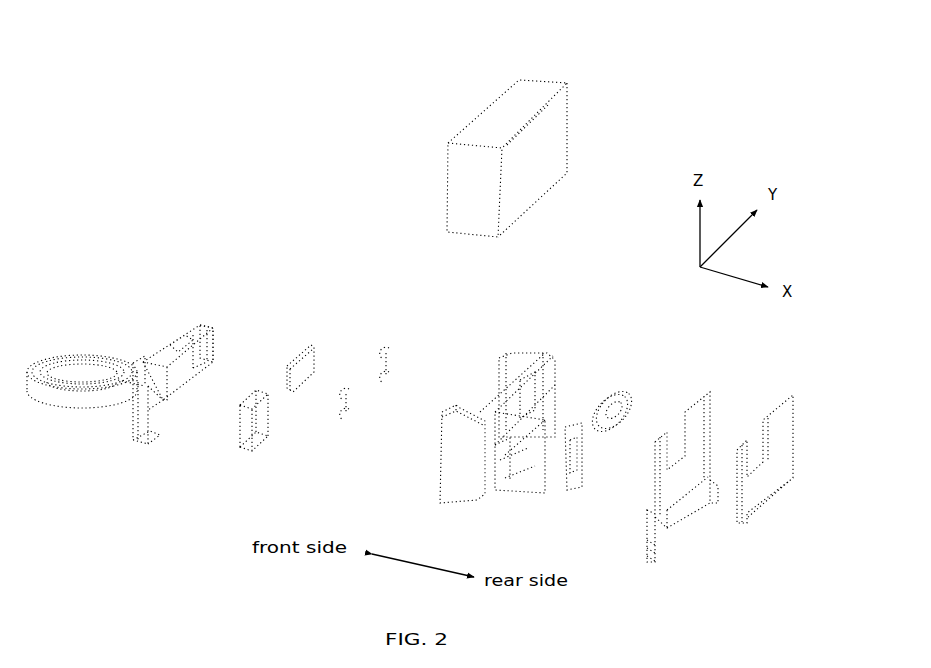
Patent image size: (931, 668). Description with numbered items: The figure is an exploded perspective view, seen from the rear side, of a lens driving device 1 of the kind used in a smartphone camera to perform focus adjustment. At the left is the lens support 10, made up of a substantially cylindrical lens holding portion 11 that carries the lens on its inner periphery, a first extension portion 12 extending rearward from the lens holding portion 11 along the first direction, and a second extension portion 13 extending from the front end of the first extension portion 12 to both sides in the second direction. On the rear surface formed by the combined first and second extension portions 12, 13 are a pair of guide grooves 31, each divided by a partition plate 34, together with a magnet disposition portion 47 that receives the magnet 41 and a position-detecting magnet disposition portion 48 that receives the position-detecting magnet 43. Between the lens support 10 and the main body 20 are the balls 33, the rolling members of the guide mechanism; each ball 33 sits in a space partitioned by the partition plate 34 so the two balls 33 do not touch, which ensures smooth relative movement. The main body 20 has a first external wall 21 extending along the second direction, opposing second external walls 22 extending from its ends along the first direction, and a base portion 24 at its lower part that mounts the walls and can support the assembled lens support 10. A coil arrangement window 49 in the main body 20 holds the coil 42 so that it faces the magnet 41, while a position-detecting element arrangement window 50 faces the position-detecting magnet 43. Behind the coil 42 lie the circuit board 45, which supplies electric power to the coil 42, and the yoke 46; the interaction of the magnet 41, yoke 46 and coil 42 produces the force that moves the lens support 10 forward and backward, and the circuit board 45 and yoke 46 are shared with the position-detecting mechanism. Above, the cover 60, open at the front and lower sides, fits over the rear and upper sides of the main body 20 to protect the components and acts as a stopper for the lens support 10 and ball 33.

The lens driving device 1 is at (243, 50).
The lens support 10 is at (89, 305).
The lens holding portion 11 is at (45, 398).
The first extension portion 12 is at (121, 407).
The second extension portion 13 is at (143, 445).
The main body 20 is at (497, 338).
The first external wall 21 is at (534, 372).
The second external walls 22 is at (455, 490).
The base portion 24 is at (525, 447).
The guide grooves 31 is at (168, 373).
The balls 33 is at (388, 372).
The partition plate 34 is at (214, 348).
The magnet 41 is at (302, 355).
The coil 42 is at (615, 389).
The position-detecting magnet 43 is at (247, 442).
The circuit board 45 is at (658, 515).
The yoke 46 is at (748, 500).
The magnet disposition portion 47 is at (199, 370).
The position-detecting magnet disposition portion 48 is at (150, 402).
The coil arrangement window 49 is at (532, 401).
The position-detecting element arrangement window 50 is at (499, 449).
The cover 60 is at (523, 93).